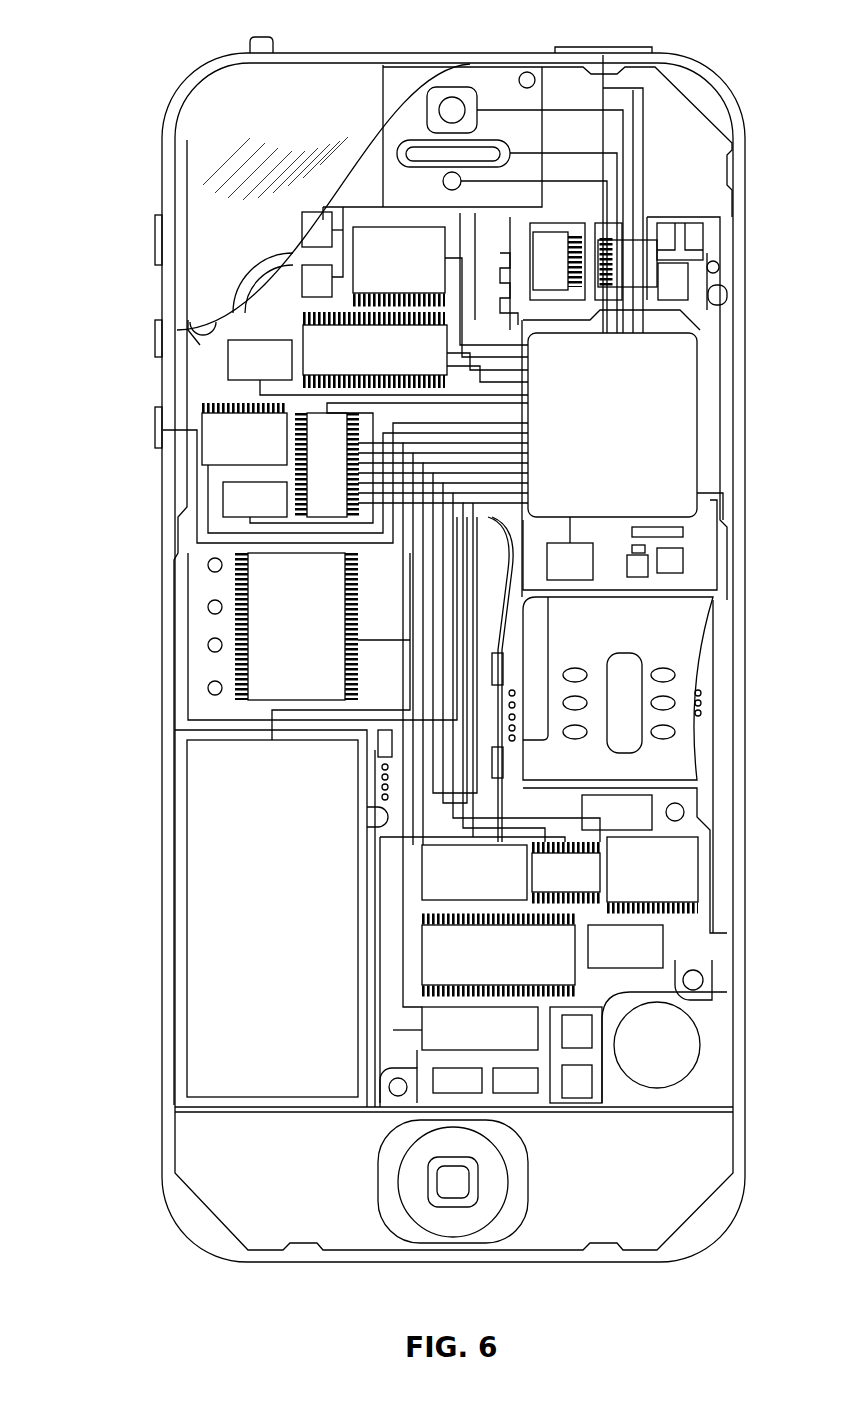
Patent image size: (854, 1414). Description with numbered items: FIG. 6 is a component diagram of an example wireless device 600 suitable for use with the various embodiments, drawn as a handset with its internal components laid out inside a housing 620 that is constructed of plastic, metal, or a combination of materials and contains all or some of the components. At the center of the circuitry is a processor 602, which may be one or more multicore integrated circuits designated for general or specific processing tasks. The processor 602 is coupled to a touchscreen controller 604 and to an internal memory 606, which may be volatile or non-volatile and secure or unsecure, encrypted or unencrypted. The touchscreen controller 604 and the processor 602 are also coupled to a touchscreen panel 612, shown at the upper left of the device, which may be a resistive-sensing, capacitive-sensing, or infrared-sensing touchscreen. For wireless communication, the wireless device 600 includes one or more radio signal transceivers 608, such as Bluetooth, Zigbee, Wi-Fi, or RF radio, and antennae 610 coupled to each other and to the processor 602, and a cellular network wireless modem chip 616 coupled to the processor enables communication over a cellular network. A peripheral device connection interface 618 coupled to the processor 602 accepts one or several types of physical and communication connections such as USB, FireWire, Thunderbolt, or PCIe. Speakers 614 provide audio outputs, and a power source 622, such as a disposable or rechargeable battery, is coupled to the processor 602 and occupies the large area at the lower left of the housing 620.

The wireless device 600 is at (103, 88).
The processor 602 is at (612, 425).
The touchscreen controller 604 is at (399, 263).
The internal memory 606 is at (375, 350).
The radio signal transceivers 608 is at (677, 243).
The antennae 610 is at (688, 283).
The touchscreen panel 612 is at (190, 165).
The speakers 614 is at (428, 133).
The cellular network wireless modem chip 616 is at (498, 955).
The peripheral device connection interface 618 is at (480, 1028).
The housing 620 is at (745, 1118).
The power source 622 is at (272, 918).